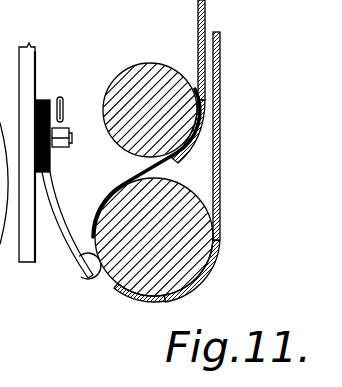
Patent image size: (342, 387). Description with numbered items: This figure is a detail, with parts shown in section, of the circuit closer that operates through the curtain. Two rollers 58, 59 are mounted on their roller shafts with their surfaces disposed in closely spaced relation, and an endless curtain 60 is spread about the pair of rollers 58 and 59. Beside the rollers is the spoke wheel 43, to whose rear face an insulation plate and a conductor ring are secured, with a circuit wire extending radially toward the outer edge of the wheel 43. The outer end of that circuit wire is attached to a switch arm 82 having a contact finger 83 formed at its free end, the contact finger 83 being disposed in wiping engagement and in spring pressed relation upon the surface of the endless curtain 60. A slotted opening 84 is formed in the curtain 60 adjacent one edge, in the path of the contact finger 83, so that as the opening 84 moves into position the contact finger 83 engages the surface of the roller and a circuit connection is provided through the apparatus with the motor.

The spoke wheel 43 is at (32, 73).
The roller 58 is at (150, 63).
The roller 59 is at (178, 192).
The endless curtain 60 is at (220, 109).
The switch arm 82 is at (62, 200).
The contact finger 83 is at (96, 279).
The slotted opening 84 is at (117, 289).